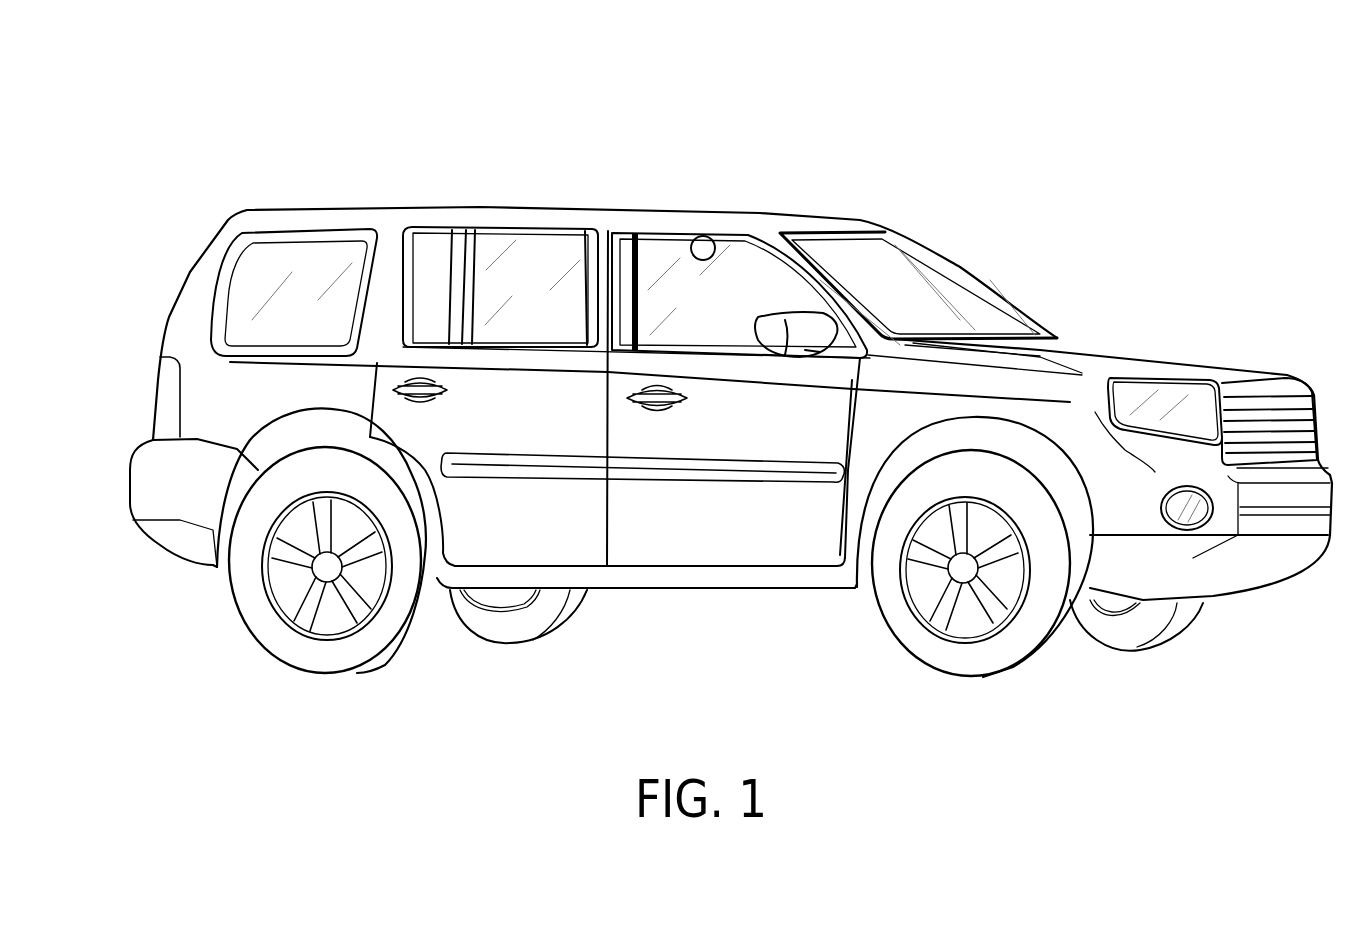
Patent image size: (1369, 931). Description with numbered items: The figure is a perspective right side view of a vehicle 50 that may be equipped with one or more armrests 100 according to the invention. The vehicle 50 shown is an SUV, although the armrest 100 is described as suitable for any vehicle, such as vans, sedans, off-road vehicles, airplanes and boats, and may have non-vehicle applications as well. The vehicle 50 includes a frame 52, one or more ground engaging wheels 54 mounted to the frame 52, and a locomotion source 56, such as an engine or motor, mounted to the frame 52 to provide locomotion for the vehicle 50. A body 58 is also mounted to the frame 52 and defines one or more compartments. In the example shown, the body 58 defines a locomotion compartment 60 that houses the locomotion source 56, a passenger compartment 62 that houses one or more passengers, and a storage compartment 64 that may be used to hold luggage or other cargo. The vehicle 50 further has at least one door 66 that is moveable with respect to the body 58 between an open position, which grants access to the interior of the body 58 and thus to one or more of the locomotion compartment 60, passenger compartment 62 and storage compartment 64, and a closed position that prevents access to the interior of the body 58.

The armrest 100 is at (552, 167).
The vehicle 50 is at (652, 147).
The frame 52 is at (635, 592).
The ground engaging wheels 54 is at (302, 668).
The locomotion source 56 is at (1173, 322).
The body 58 is at (417, 218).
The locomotion compartment 60 is at (1290, 393).
The passenger compartment 62 is at (695, 236).
The storage compartment 64 is at (215, 233).
The door 66 is at (1076, 352).